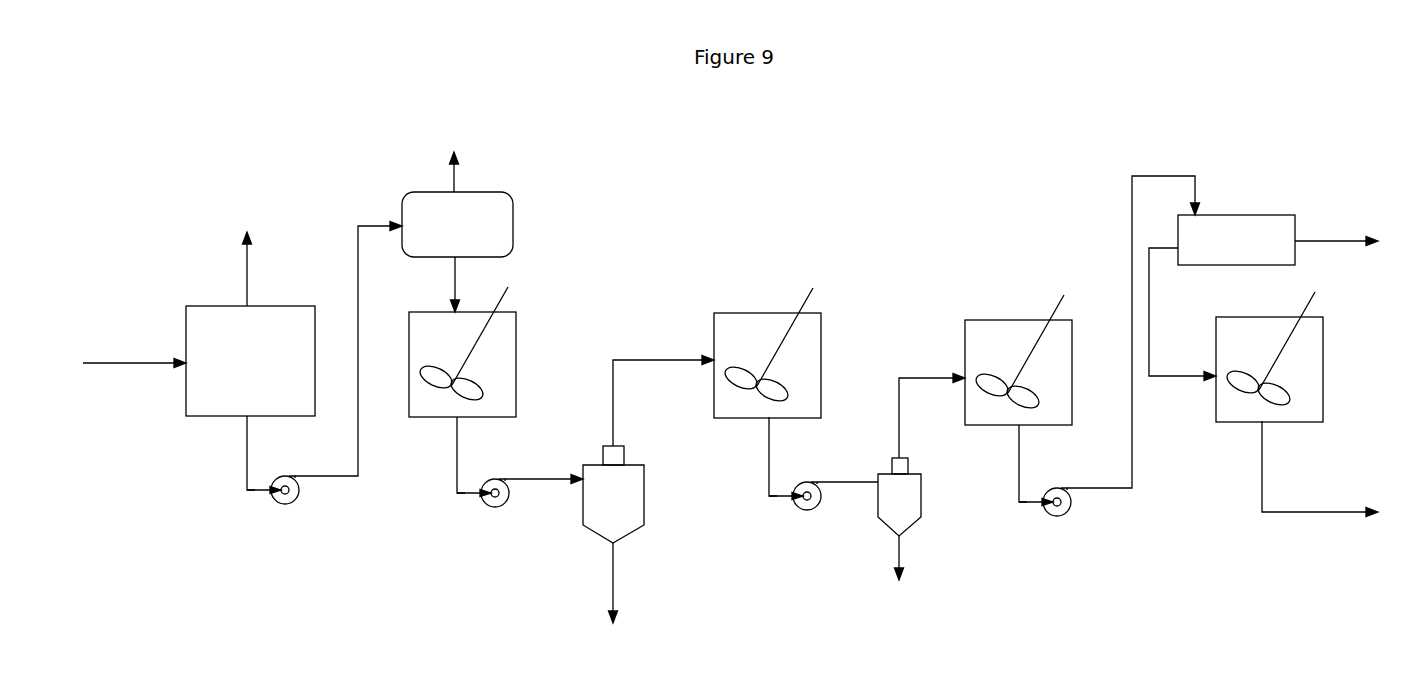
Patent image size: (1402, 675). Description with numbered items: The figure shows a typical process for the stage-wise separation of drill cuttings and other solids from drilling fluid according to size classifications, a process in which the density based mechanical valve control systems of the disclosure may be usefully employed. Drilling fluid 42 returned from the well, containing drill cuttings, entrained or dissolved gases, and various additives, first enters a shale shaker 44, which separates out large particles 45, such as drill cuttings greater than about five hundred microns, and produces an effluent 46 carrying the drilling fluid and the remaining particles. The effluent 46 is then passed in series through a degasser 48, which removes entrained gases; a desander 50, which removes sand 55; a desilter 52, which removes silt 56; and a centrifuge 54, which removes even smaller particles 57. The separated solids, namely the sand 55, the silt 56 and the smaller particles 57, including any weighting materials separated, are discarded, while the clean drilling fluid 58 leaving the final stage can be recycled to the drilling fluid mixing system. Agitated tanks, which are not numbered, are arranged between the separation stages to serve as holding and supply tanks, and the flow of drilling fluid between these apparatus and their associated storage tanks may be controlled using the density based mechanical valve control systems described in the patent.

The drilling fluid 42 is at (134, 352).
The shale shaker 44 is at (250, 361).
The large particles 45 is at (262, 269).
The effluent 46 is at (348, 349).
The degasser 48 is at (457, 224).
The desander 50 is at (613, 494).
The desilter 52 is at (899, 497).
The centrifuge 54 is at (1236, 240).
The sand 55 is at (612, 599).
The silt 56 is at (898, 575).
The smaller particles 57 is at (1336, 232).
The clean drilling fluid 58 is at (1320, 469).